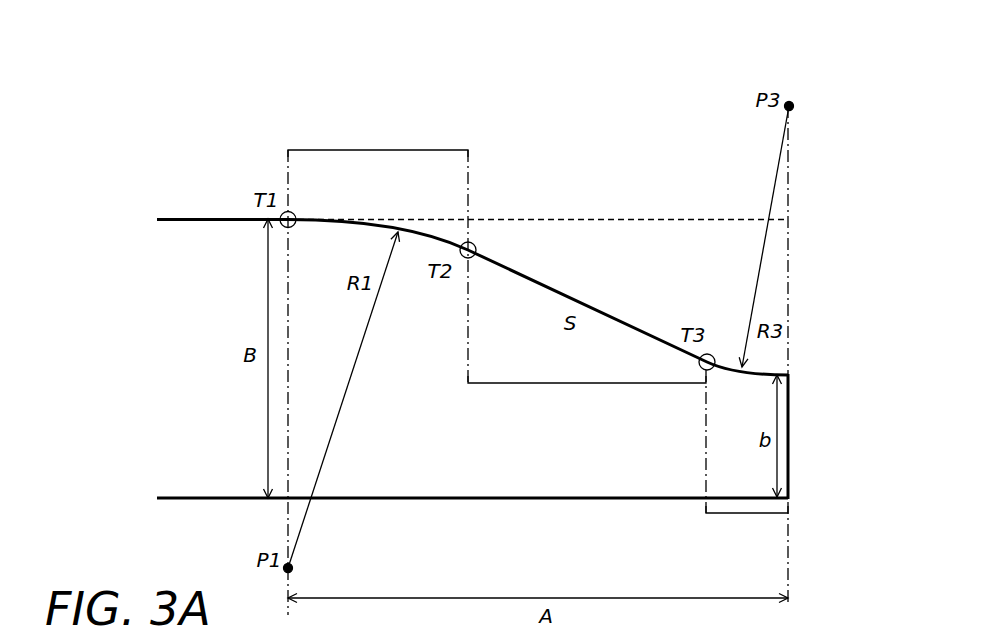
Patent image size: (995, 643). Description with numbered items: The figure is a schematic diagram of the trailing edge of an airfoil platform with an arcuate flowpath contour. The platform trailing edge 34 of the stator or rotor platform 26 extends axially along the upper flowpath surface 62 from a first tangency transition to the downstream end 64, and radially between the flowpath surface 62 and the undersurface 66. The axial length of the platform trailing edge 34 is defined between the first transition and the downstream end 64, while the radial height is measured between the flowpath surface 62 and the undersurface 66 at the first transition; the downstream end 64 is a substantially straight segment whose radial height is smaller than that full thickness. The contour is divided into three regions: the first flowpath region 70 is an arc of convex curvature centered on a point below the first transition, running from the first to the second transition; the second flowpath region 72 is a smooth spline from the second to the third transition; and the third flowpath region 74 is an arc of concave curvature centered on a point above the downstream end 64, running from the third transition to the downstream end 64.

The stator or rotor platform 26 is at (226, 296).
The platform trailing edge 34 is at (613, 148).
The flowpath surface 62 is at (205, 217).
The downstream end 64 is at (790, 437).
The undersurface 66 is at (565, 500).
The first flowpath region 70 is at (378, 150).
The second flowpath region 72 is at (587, 383).
The third flowpath region 74 is at (747, 513).